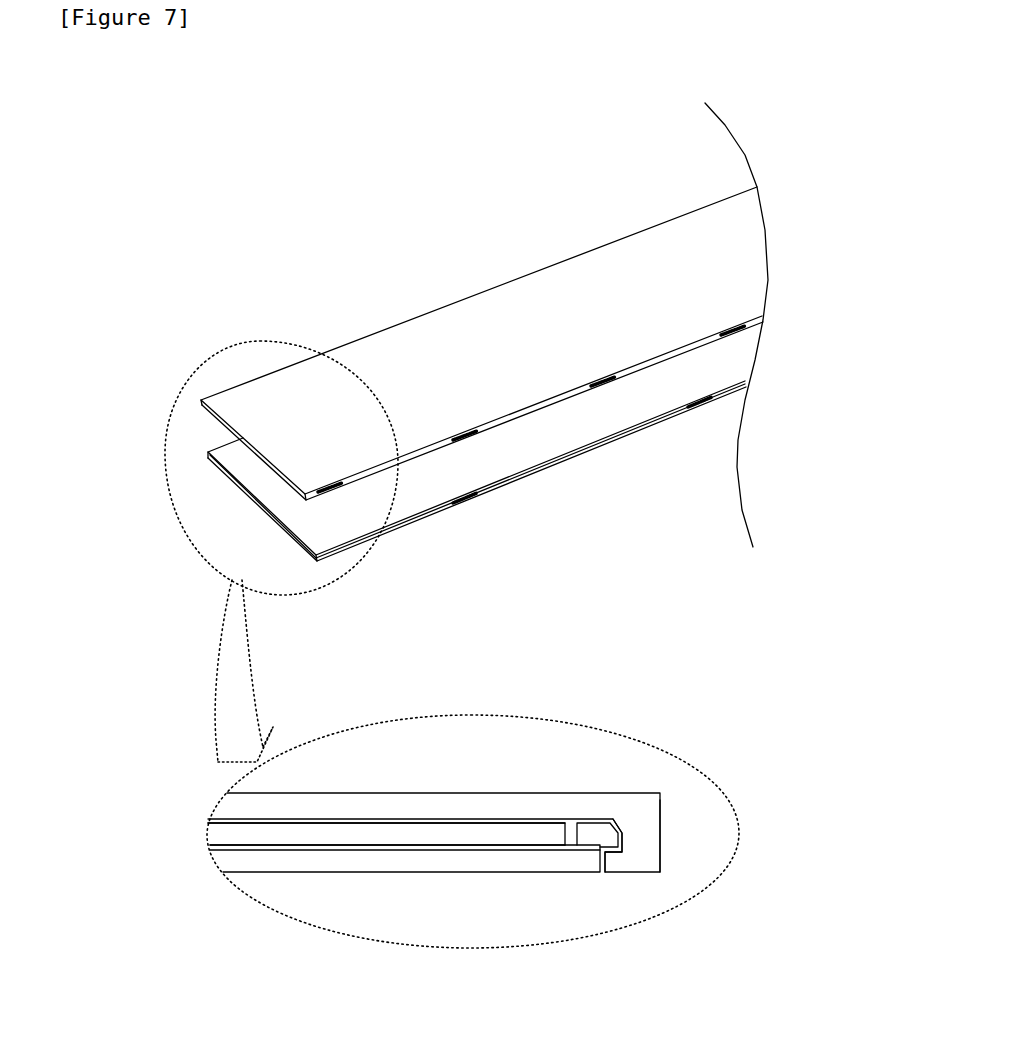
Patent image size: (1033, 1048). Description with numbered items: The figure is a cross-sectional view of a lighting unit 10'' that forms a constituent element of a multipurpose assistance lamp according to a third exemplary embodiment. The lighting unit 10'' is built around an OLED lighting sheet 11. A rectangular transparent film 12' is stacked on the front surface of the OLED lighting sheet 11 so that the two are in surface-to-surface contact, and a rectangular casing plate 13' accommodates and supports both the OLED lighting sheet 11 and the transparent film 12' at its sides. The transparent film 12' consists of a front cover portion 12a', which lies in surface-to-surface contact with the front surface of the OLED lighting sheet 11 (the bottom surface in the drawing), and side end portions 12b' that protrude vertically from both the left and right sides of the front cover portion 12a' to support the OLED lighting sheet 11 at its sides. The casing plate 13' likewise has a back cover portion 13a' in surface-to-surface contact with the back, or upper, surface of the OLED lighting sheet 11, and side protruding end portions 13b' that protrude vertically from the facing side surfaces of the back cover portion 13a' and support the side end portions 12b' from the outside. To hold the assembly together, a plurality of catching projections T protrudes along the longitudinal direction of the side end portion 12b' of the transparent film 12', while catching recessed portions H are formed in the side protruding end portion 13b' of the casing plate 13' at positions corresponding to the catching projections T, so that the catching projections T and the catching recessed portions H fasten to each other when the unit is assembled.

The lighting unit 10'' is at (241, 205).
The OLED lighting sheet 11 is at (317, 850).
The transparent film 12' is at (482, 596).
The front cover portion 12a' is at (531, 671).
The side end portion 12b' is at (631, 905).
The casing plate 13' is at (477, 626).
The back cover portion 13a' is at (541, 595).
The side protruding end portion 13b' is at (733, 852).
The catching projection T is at (468, 437).
The catching recessed portion H is at (240, 450).